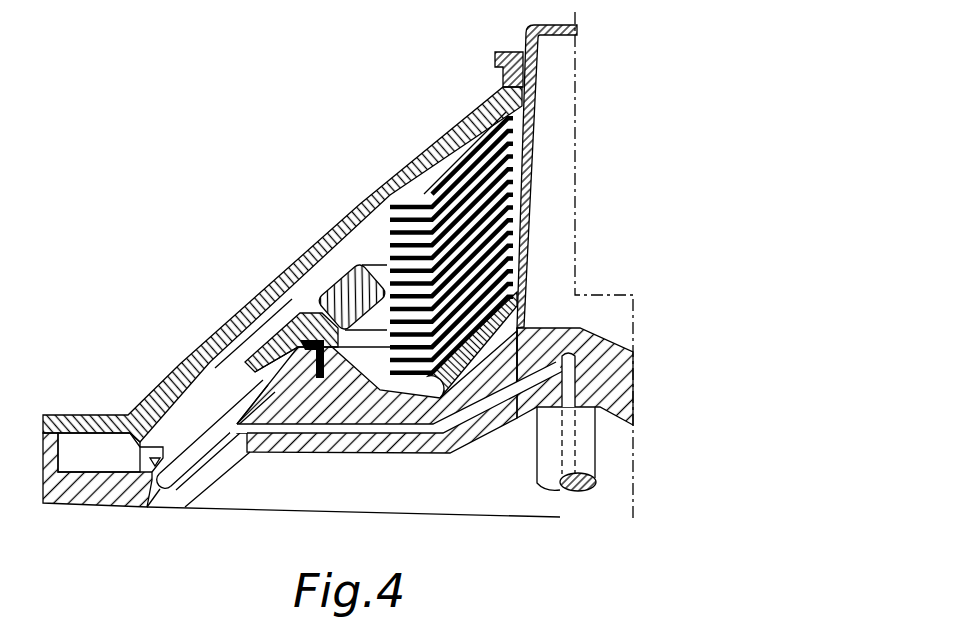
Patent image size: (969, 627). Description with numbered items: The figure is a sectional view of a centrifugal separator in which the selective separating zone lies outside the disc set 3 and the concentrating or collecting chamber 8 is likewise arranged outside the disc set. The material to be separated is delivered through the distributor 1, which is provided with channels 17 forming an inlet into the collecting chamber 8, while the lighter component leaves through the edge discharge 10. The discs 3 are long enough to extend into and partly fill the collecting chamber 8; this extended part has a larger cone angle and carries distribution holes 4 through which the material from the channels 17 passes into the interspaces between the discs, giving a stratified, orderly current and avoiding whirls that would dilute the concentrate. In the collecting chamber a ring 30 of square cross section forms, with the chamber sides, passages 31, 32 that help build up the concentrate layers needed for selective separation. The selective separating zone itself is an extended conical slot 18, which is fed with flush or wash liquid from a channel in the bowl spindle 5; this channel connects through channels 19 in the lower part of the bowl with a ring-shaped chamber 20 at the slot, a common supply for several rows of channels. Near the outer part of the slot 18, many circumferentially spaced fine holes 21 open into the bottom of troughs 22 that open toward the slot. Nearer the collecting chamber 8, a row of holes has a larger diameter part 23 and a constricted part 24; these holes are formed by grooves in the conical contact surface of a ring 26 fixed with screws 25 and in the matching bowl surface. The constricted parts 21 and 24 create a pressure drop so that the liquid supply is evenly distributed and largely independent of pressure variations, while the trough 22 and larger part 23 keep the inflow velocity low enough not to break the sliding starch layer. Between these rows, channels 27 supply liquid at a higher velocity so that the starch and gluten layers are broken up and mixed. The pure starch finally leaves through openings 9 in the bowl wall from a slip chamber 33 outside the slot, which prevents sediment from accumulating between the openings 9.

The distributor 1 is at (527, 190).
The disc set 3 is at (477, 190).
The distribution holes 4 is at (423, 237).
The bowl spindle 5 is at (548, 448).
The collecting chamber 8 is at (373, 372).
The openings 9 is at (52, 430).
The edge discharge 10 is at (526, 64).
The channels 17 is at (477, 360).
The conical slot 18 is at (257, 337).
The channels 19 is at (397, 432).
The ring-shaped chamber 20 is at (170, 483).
The fine holes 21 is at (157, 460).
The troughs 22 is at (125, 452).
The larger diameter part 23 is at (257, 367).
The smaller diameter part 24 is at (250, 390).
The screws 25 is at (328, 323).
The ring 26 is at (298, 358).
The channels 27 is at (207, 413).
The ring 30 is at (353, 283).
The passage 31 is at (333, 267).
The passage 32 is at (325, 312).
The slip chamber 33 is at (85, 455).